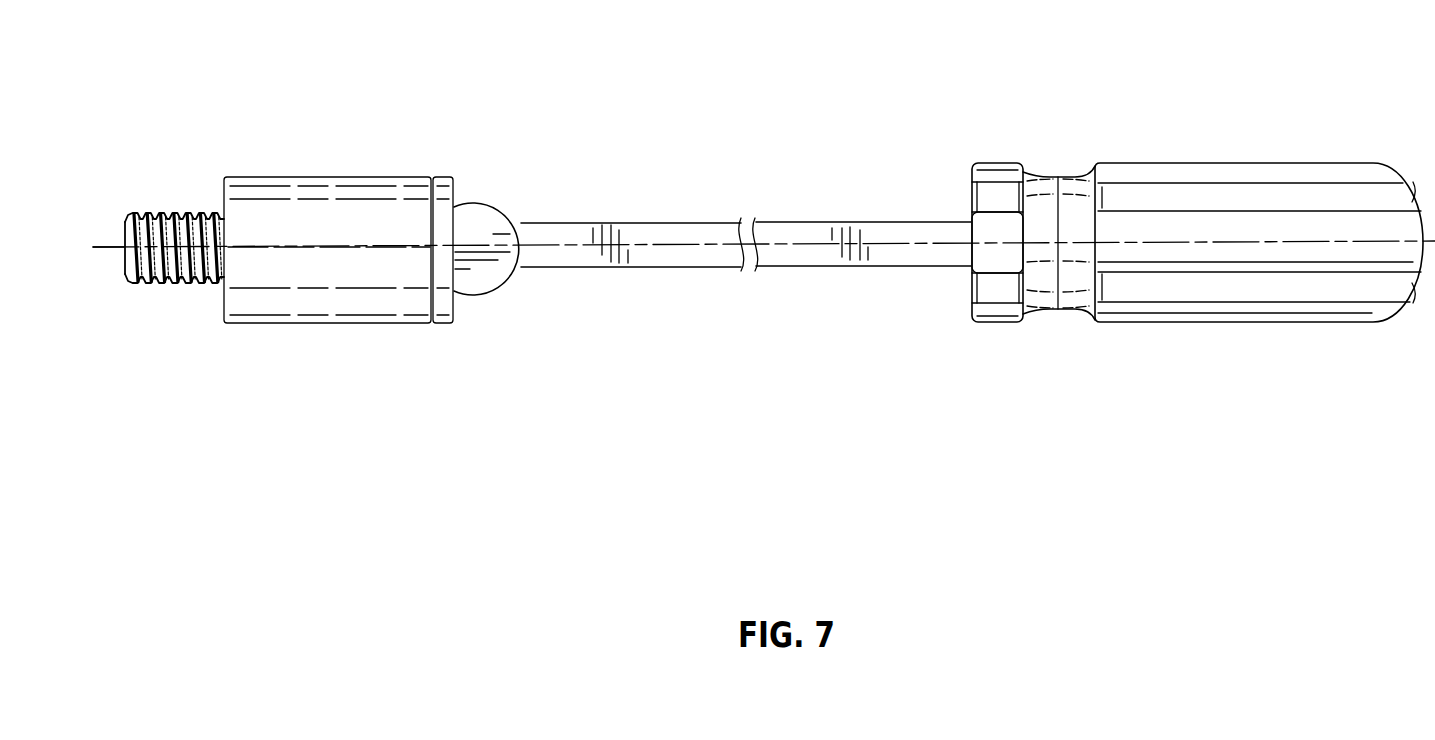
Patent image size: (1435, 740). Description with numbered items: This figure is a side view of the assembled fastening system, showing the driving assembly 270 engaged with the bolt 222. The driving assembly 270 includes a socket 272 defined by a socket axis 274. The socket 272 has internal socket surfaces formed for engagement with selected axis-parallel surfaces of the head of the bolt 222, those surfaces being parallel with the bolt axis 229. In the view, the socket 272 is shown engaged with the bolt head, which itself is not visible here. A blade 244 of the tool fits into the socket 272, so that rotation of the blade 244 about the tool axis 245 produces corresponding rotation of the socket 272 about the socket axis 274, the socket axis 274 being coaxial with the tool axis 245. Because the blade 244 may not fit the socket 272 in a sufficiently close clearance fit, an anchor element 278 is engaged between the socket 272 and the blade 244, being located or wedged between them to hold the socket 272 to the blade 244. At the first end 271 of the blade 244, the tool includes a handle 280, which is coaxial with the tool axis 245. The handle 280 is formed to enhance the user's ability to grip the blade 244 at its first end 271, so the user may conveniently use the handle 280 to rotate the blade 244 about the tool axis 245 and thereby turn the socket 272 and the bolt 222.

The driving assembly 270 is at (1044, 104).
The bolt 222 is at (207, 190).
The bolt axis 229 is at (114, 250).
The socket 272 is at (358, 176).
The socket axis 274 is at (347, 246).
The anchor element 278 is at (483, 212).
The blade 244 is at (568, 222).
The tool axis 245 is at (932, 240).
The first end 271 is at (968, 258).
The handle 280 is at (1245, 292).